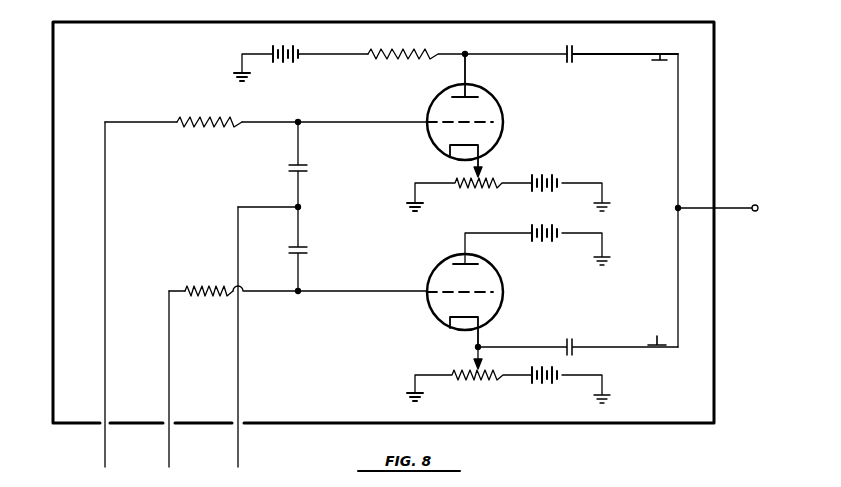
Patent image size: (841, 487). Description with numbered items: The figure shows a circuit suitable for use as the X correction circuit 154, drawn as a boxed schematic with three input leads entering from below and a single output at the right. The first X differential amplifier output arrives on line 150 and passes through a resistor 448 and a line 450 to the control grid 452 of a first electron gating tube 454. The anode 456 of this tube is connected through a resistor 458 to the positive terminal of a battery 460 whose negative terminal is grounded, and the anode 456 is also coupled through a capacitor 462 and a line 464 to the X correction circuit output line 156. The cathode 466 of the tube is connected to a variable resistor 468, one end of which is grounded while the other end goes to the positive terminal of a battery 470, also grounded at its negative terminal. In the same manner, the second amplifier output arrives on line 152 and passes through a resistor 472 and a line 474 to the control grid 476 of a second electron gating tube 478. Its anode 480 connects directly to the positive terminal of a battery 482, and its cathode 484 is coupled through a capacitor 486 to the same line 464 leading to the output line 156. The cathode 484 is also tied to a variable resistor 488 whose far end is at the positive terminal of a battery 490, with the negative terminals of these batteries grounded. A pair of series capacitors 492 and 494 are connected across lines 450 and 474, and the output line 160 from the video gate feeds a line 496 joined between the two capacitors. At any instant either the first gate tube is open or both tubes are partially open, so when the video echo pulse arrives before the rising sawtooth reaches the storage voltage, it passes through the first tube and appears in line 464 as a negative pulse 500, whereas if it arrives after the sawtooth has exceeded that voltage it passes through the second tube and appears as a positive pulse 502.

The line 150 is at (106, 458).
The line 152 is at (170, 458).
The X correction circuit 154 is at (650, 426).
The X correction circuit output line 156 is at (722, 207).
The output line from the video gate 160 is at (239, 458).
The resistor 448 is at (181, 118).
The line 450 is at (258, 122).
The control grid 452 is at (492, 124).
The electron gating tube 454 is at (499, 142).
The anode 456 is at (478, 94).
The resistor 458 is at (393, 45).
The battery 460 is at (300, 53).
The capacitor 462 is at (577, 51).
The line 464 is at (678, 128).
The cathode 466 is at (452, 146).
The variable resistor 468 is at (462, 188).
The battery 470 is at (564, 180).
The resistor 472 is at (188, 287).
The line 474 is at (320, 292).
The control grid 476 is at (492, 292).
The electron gating tube 478 is at (429, 306).
The anode 480 is at (455, 262).
The battery 482 is at (531, 242).
The cathode 484 is at (450, 329).
The capacitor 486 is at (577, 348).
The variable resistor 488 is at (462, 380).
The battery 490 is at (530, 384).
The capacitor 492 is at (289, 171).
The capacitor 494 is at (307, 249).
The line 496 is at (300, 203).
The negative pulse 500 is at (650, 64).
The positive pulse 502 is at (648, 338).